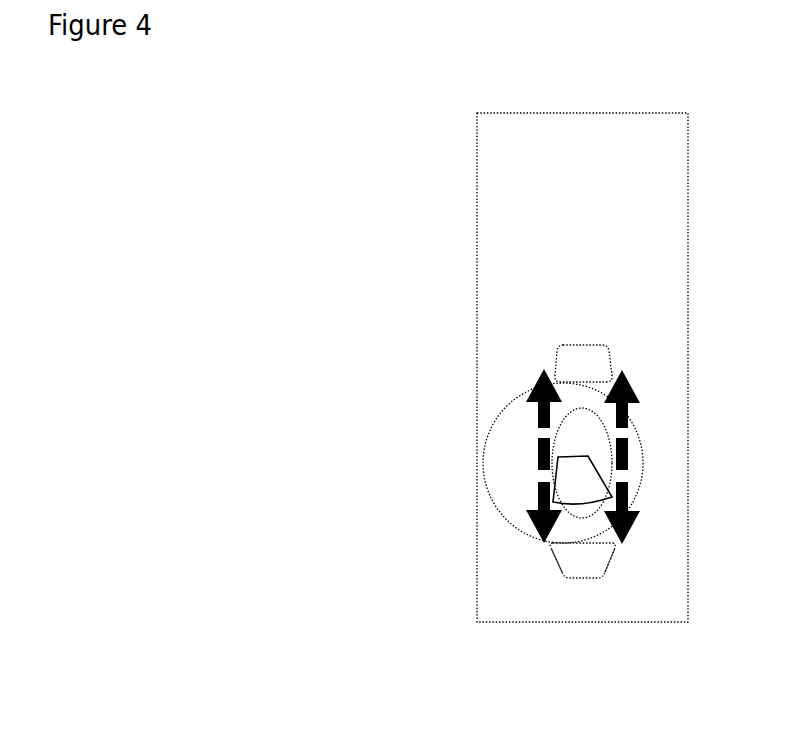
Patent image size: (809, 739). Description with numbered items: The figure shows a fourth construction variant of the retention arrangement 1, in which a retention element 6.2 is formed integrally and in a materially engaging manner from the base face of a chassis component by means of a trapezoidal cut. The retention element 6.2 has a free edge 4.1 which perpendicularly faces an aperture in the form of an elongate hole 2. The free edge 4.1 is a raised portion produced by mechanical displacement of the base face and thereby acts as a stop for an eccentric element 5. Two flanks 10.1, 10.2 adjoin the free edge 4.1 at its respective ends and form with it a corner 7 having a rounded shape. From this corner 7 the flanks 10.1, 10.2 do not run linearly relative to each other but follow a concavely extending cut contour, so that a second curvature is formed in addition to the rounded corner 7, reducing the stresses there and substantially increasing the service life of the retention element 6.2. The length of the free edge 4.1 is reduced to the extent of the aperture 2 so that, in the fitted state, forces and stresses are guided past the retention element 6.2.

The device 1 is at (742, 185).
The elongate hole 2 is at (577, 450).
The free edge 4.1 is at (598, 389).
The eccentric element 5 is at (637, 467).
The retention element 6.2 is at (582, 361).
The corner 7 is at (624, 543).
The flank 10.1 is at (609, 571).
The flank 10.2 is at (558, 574).